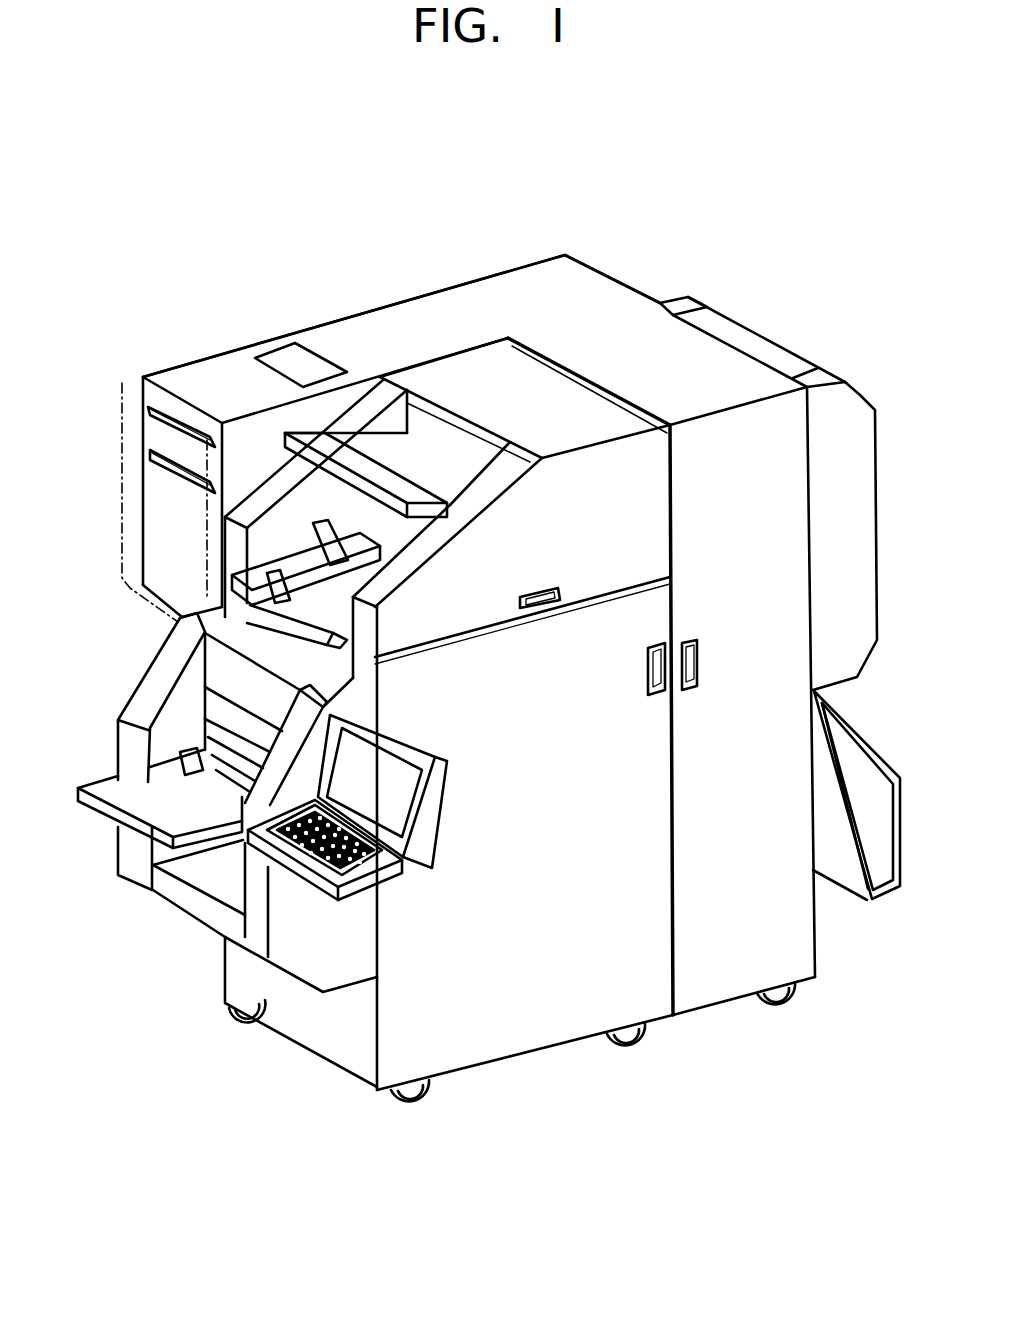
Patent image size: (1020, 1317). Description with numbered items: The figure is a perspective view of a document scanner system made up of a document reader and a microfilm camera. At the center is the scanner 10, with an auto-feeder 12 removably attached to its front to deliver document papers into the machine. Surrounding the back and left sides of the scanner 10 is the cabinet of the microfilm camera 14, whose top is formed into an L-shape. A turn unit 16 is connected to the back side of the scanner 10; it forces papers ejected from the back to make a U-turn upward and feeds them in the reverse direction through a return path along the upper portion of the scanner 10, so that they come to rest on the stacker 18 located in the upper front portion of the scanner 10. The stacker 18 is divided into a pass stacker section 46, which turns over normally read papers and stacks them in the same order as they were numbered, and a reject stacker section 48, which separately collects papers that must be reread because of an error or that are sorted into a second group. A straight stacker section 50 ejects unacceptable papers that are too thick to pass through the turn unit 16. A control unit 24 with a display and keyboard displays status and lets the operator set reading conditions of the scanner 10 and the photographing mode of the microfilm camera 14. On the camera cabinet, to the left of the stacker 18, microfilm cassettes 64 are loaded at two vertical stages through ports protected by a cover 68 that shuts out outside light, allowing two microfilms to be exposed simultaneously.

The scanner 10 is at (593, 1090).
The auto-feeder 12 is at (190, 730).
The microfilm camera 14 is at (573, 285).
The turn unit 16 is at (825, 407).
The stacker 18 is at (370, 453).
The control unit 24 is at (390, 873).
The pass stacker section 46 is at (293, 567).
The reject stacker section 48 is at (420, 458).
The straight stacker section 50 is at (876, 900).
The microfilm cassette 64 is at (153, 447).
The cover 68 is at (122, 512).